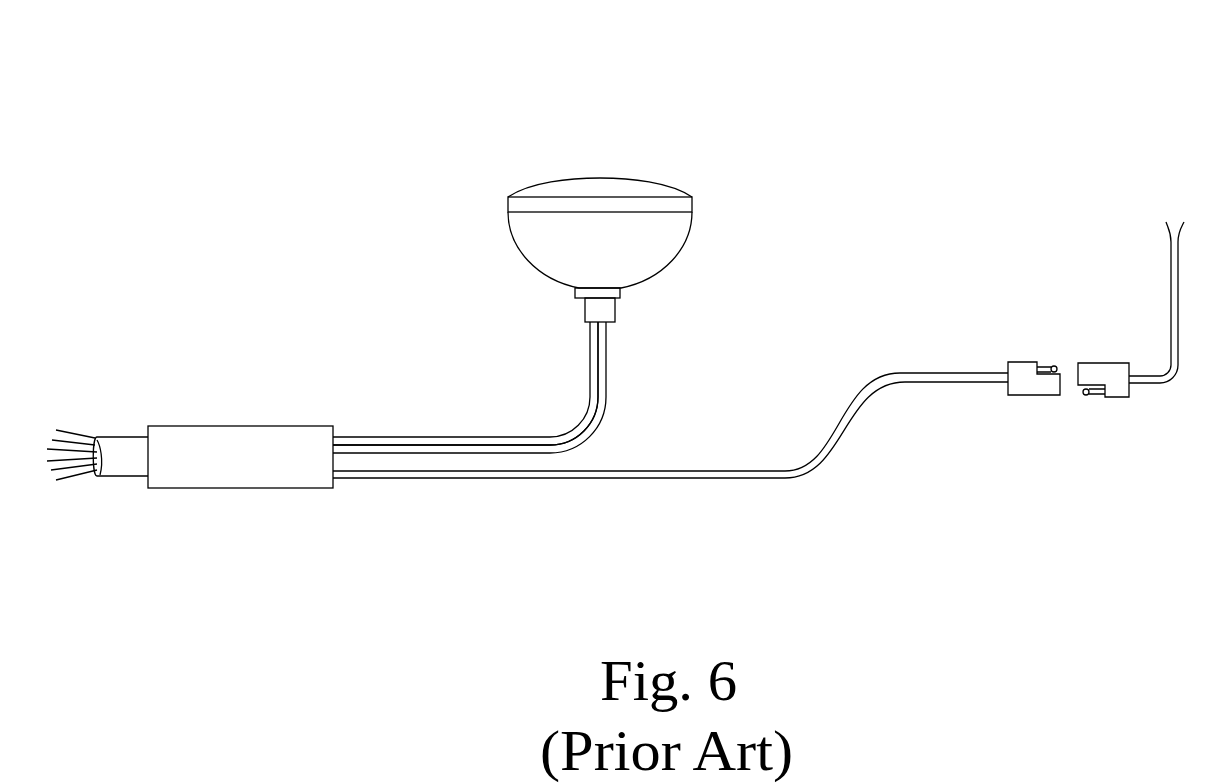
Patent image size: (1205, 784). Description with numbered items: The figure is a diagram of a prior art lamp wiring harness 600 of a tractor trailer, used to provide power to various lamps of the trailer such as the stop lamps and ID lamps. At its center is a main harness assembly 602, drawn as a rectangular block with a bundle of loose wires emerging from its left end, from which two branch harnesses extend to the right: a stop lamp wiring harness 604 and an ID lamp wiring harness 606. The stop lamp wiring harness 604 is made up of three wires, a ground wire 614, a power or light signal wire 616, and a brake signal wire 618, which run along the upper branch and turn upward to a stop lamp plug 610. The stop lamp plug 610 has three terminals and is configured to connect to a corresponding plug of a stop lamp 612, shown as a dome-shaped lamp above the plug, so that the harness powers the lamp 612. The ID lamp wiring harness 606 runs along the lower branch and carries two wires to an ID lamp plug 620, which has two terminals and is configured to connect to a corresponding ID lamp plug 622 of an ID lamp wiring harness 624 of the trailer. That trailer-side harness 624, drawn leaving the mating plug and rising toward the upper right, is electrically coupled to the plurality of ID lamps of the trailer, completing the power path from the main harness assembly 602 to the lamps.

The lamp wiring harness 600 is at (315, 117).
The main harness assembly 602 is at (248, 497).
The stop lamp wiring harness 604 is at (437, 375).
The ID lamp wiring harness 606 is at (814, 486).
The stop lamp plug 610 is at (615, 312).
The stop lamp 612 is at (692, 216).
The ground wire 614 is at (590, 364).
The power or light signal wire 616 is at (600, 378).
The brake signal wire 618 is at (608, 349).
The ID lamp plug 620 is at (1020, 362).
The corresponding ID lamp plug 622 is at (1115, 397).
The ID lamp wiring harness of the trailer 624 is at (1170, 287).